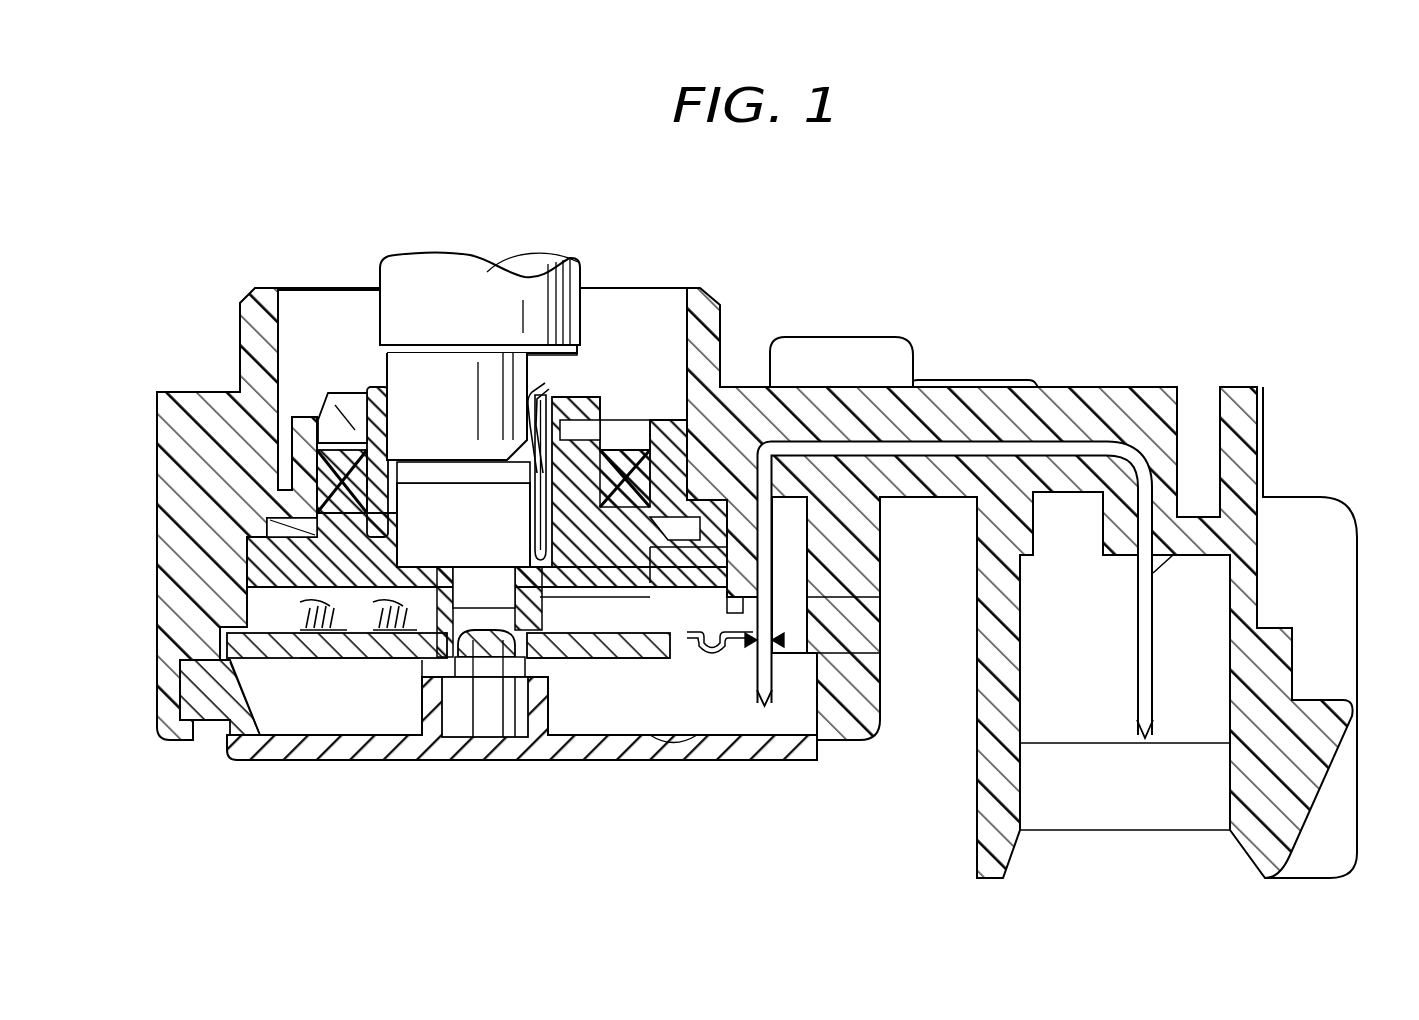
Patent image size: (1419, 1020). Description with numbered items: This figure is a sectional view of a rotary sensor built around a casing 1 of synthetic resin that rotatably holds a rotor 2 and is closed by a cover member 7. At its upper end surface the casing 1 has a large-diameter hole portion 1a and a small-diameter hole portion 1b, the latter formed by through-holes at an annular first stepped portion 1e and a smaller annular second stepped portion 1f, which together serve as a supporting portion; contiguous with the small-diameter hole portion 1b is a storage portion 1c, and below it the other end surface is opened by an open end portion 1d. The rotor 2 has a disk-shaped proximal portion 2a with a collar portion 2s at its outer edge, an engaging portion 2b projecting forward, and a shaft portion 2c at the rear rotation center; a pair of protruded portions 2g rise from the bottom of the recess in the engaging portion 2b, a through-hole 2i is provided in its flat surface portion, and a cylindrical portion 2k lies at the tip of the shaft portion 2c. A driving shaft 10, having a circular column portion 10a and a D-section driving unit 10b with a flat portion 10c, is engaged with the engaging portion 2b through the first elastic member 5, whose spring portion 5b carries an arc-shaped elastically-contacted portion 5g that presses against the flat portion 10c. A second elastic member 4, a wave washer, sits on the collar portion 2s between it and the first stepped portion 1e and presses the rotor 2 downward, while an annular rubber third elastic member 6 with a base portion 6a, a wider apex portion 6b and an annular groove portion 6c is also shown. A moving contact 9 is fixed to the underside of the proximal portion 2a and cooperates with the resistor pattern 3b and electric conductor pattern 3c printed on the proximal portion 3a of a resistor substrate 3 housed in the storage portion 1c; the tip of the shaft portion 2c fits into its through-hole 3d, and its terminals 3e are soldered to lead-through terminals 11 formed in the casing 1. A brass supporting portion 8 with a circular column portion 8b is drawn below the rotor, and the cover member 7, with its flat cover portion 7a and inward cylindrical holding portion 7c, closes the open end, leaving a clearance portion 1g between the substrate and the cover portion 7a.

The casing 1 is at (720, 306).
The large-diameter hole portion 1a is at (290, 310).
The small-diameter hole portion 1b is at (288, 410).
The storage portion 1c is at (593, 700).
The open end portion 1d is at (213, 735).
The first stepped portion 1e is at (707, 440).
The second stepped portion 1f is at (620, 420).
The clearance portion 1g is at (630, 713).
The rotor 2 is at (660, 592).
The proximal portion 2a is at (333, 563).
The engaging portion 2b is at (340, 423).
The shaft portion 2c is at (548, 610).
The protruded portions 2g is at (330, 470).
The through-hole 2i is at (575, 433).
The cylindrical portion 2k is at (423, 717).
The collar portion 2s is at (710, 572).
The resistor substrate 3 is at (393, 727).
The proximal portion 3a is at (240, 643).
The resistor pattern 3b is at (310, 660).
The electric conductor pattern 3c is at (380, 658).
The through-hole 3d is at (547, 645).
The terminals 3e is at (712, 650).
The second elastic member 4 is at (745, 455).
The first elastic member 5 is at (530, 445).
The spring portion 5b is at (524, 471).
The elastically-contacted portion 5g is at (530, 403).
The third elastic member 6 is at (677, 500).
The base portion 6a is at (605, 587).
The apex portion 6b is at (650, 493).
The annular groove portion 6c is at (553, 510).
The cover member 7 is at (672, 765).
The cover portion 7a is at (387, 763).
The holding portion 7c is at (550, 712).
The supporting portion 8 is at (510, 727).
The circular column portion 8b is at (473, 670).
The moving contact 9 is at (300, 613).
The driving shaft 10 is at (572, 263).
The circular column portion 10a is at (447, 270).
The driving unit 10b is at (397, 368).
The flat portion 10c is at (533, 368).
The lead-through terminals 11 is at (1157, 615).